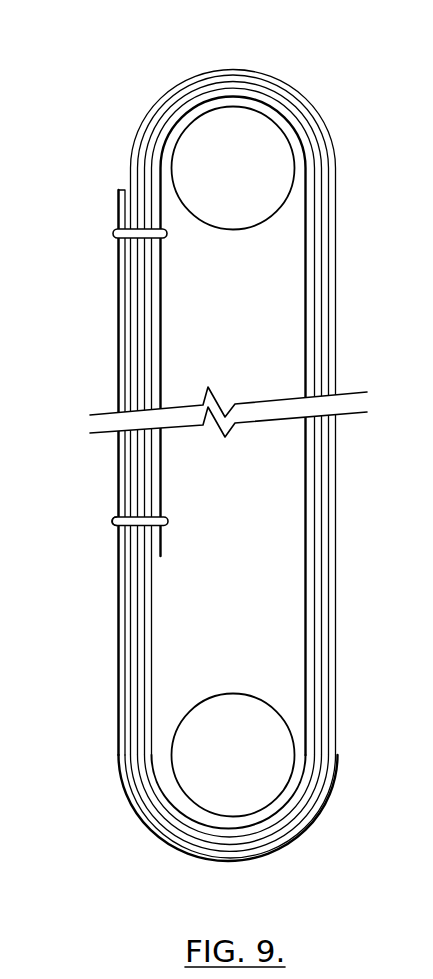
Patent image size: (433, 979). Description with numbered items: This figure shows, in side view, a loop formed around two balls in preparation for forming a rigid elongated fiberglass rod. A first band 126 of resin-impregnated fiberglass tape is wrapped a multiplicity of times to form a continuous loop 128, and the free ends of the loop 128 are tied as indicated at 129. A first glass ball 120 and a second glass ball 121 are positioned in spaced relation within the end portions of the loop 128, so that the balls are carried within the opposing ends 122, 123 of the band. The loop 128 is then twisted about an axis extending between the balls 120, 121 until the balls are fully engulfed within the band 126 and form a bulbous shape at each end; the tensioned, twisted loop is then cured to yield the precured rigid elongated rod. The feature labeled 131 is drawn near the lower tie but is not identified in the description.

The first glass ball 120 is at (252, 142).
The second glass ball 121 is at (208, 787).
The opposing end of the twisted fiberglass band 122 is at (118, 137).
The opposing end of the twisted fiberglass band 123 is at (312, 842).
The first band 126 is at (122, 455).
The continuous loop 128 is at (203, 452).
The ties 129 is at (167, 236).
The clamp end 131 is at (117, 525).